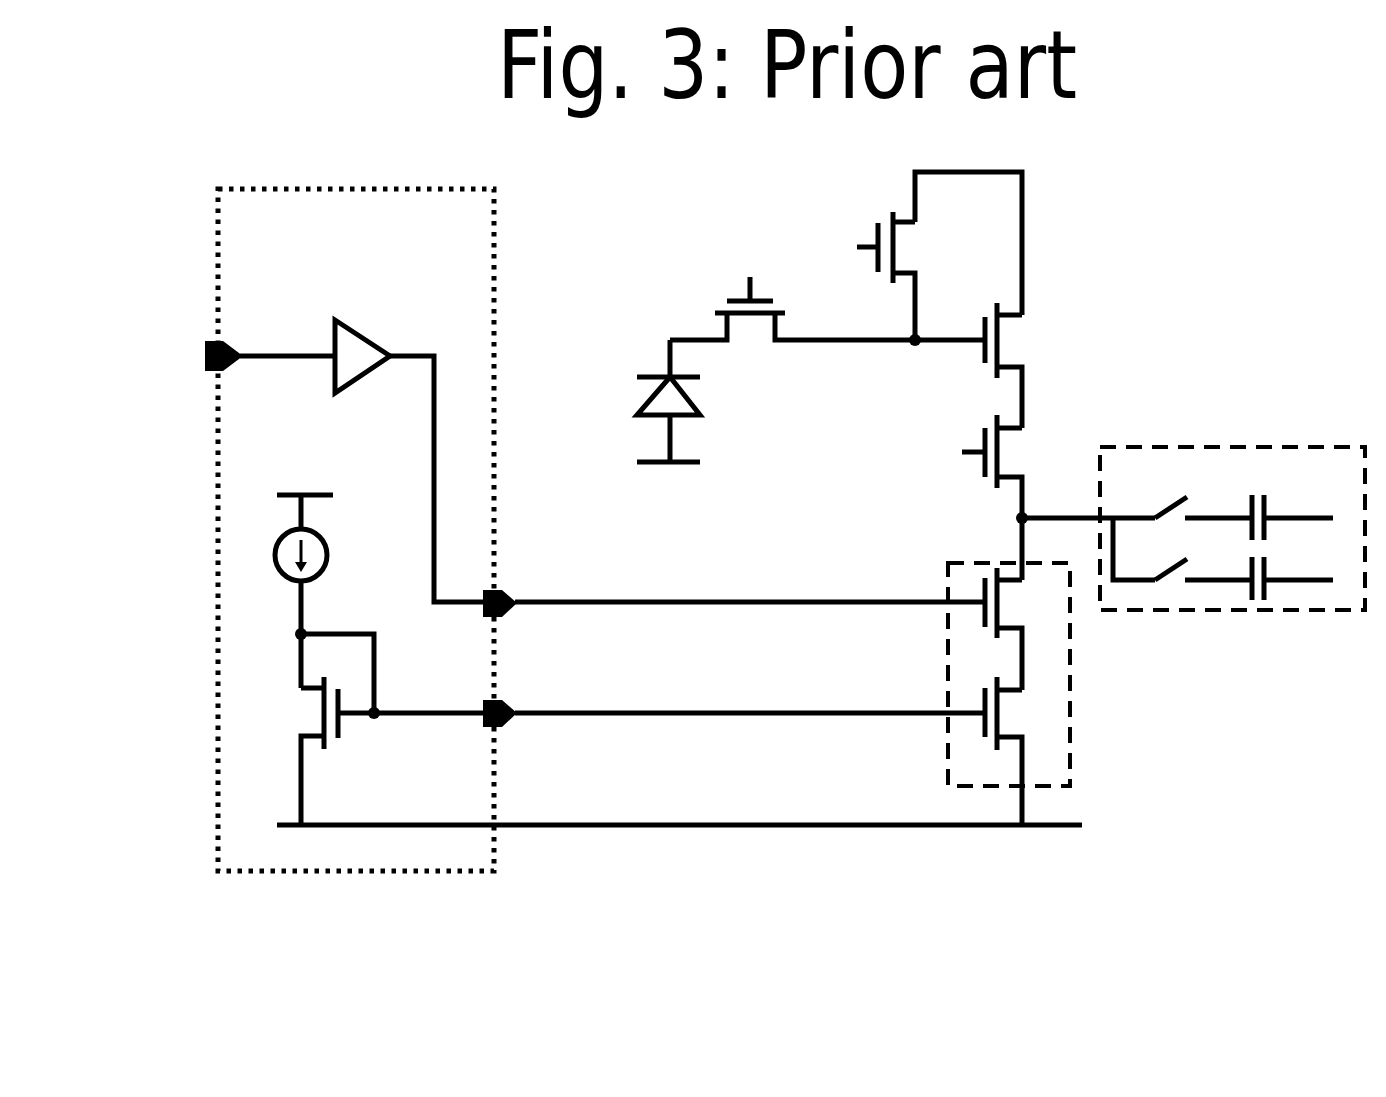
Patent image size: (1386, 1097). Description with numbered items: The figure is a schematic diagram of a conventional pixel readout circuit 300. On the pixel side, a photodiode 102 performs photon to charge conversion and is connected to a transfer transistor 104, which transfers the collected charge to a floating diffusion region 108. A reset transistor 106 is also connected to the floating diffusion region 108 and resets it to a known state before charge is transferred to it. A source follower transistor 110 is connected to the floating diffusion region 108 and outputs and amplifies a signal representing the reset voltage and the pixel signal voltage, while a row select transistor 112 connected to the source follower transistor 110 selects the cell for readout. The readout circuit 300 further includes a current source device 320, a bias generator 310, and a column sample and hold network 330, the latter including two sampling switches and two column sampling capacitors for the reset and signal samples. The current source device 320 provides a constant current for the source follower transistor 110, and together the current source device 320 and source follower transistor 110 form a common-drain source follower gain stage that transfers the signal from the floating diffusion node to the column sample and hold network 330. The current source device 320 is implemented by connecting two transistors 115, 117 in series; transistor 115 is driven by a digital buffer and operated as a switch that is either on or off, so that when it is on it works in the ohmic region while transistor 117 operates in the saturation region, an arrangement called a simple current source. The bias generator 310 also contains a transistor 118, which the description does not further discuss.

The pixel readout circuit 300 is at (305, 90).
The photodiode 102 is at (702, 367).
The transfer transistor 104 is at (715, 303).
The reset transistor 106 is at (880, 212).
The floating diffusion region 108 is at (915, 350).
The source follower transistor 110 is at (992, 302).
The row select transistor 112 is at (988, 487).
The transistor 115 is at (788, 629).
The transistor 117 is at (788, 751).
The bias transistor 118 is at (309, 751).
The bias generator 310 is at (495, 189).
The current source device 320 is at (1073, 640).
The column sample and hold network 330 is at (1160, 445).